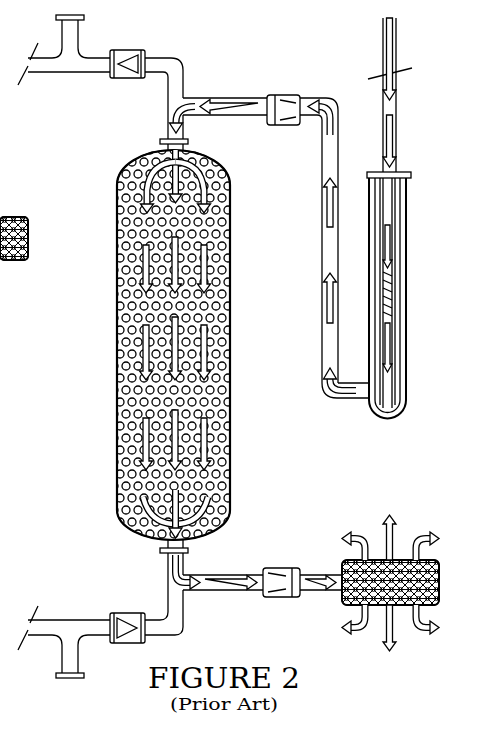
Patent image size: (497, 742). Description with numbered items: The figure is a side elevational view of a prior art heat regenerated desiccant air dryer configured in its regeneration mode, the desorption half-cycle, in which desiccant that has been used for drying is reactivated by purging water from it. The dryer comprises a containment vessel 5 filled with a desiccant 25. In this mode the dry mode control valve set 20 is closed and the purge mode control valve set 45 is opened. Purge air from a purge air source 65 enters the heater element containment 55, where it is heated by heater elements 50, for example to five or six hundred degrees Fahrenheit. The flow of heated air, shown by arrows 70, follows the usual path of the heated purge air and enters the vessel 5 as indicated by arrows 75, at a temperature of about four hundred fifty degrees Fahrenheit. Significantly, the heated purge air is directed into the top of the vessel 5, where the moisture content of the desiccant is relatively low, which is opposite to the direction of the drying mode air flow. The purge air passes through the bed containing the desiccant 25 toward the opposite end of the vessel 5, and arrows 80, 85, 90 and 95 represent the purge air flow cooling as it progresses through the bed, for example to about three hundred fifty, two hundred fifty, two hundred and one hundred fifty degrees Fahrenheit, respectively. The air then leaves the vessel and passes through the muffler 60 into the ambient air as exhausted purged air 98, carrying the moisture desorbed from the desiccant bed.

The containment vessel 5 is at (174, 345).
The dry mode control valve set 20 is at (136, 50).
The desiccant 25 is at (118, 303).
The purge mode control valve set 45 is at (278, 95).
The heater elements 50 is at (411, 295).
The heater element containment 55 is at (408, 229).
The muffler 60 is at (440, 584).
The purge air source 65 is at (393, 58).
The heated air flow arrows 70 is at (236, 111).
The vessel entry arrows 75 is at (150, 200).
The purge air flow arrows 80 is at (204, 265).
The purge air flow arrows 85 is at (204, 351).
The purge air flow arrows 90 is at (202, 444).
The purge air flow arrows 95 is at (206, 516).
The exhausted purged air 98 is at (426, 534).